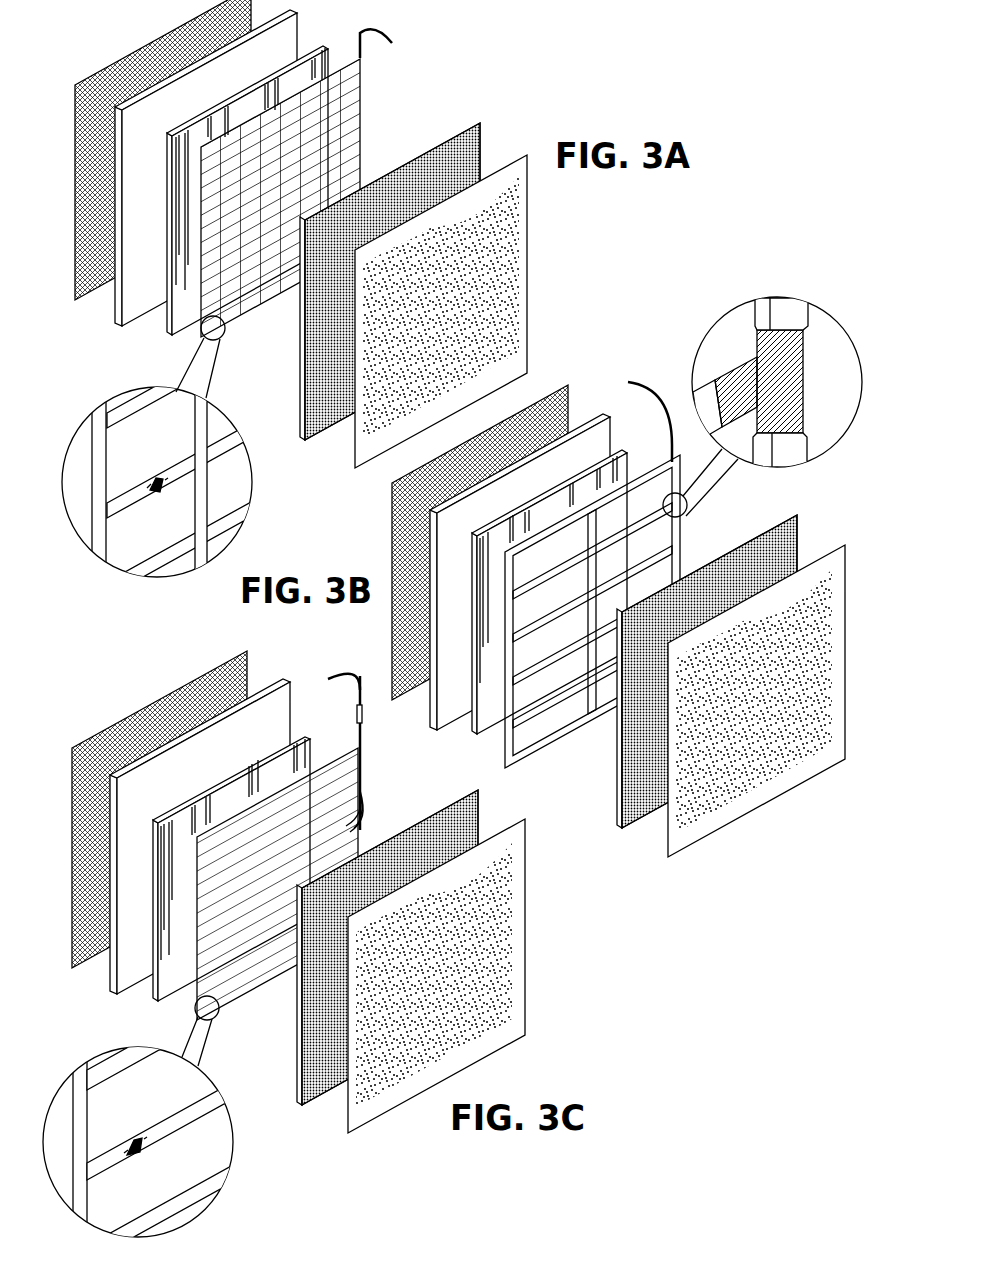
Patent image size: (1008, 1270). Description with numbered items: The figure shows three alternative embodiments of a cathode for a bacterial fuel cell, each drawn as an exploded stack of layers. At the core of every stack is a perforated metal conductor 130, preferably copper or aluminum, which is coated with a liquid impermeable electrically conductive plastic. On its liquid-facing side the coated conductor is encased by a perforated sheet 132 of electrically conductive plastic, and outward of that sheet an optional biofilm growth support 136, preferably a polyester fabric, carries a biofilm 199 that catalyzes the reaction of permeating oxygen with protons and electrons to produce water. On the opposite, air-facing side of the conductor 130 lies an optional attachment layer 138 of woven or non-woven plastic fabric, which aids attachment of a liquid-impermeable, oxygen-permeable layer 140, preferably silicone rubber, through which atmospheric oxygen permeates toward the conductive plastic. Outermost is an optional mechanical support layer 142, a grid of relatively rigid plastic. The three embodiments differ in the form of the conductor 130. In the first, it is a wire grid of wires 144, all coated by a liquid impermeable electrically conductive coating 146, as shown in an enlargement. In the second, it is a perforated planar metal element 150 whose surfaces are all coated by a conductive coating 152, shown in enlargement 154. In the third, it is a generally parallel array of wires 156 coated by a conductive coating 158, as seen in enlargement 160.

In FIG. 3A, the perforated metal conductor 130 is at (360, 92).
In FIG. 3B, the perforated metal conductor 130 is at (681, 545).
In FIG. 3C, the perforated metal conductor 130 is at (250, 1000).
In FIG. 3A, the perforated sheet 132 is at (492, 142).
In FIG. 3B, the perforated sheet 132 is at (806, 530).
In FIG. 3C, the perforated sheet 132 is at (484, 810).
In FIG. 3A, the biofilm growth support 136 is at (352, 444).
In FIG. 3B, the biofilm growth support 136 is at (668, 838).
In FIG. 3C, the biofilm growth support 136 is at (338, 1102).
In FIG. 3A, the attachment layer 138 is at (172, 335).
In FIG. 3B, the attachment layer 138 is at (490, 724).
In FIG. 3C, the attachment layer 138 is at (152, 995).
In FIG. 3A, the oxygen-permeable layer 140 is at (126, 322).
In FIG. 3B, the oxygen-permeable layer 140 is at (452, 718).
In FIG. 3C, the oxygen-permeable layer 140 is at (110, 990).
In FIG. 3A, the mechanical support layer 142 is at (140, 72).
In FIG. 3B, the mechanical support layer 142 is at (400, 538).
In FIG. 3C, the mechanical support layer 142 is at (128, 742).
In FIG. 3A, the wires 144 is at (154, 493).
In FIG. 3A, the liquid impermeable electrically conductive coating 146 is at (180, 472).
In FIG. 3B, the perforated planar metal element 150 is at (750, 365).
In FIG. 3B, the liquid impermeable electrically conductive coating 152 is at (782, 308).
In FIG. 3B, the enlargement 154 is at (686, 362).
In FIG. 3C, the wires 156 is at (134, 1157).
In FIG. 3C, the liquid impermeable electrically conductive coating 158 is at (180, 1123).
In FIG. 3C, the enlargement 160 is at (232, 1165).
In FIG. 3A, the biofilm 199 is at (515, 230).
In FIG. 3B, the biofilm 199 is at (722, 763).
In FIG. 3C, the biofilm 199 is at (402, 1033).